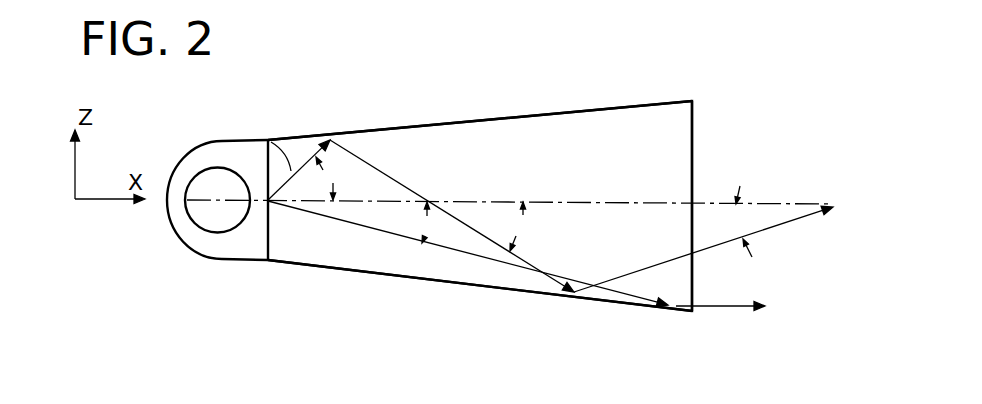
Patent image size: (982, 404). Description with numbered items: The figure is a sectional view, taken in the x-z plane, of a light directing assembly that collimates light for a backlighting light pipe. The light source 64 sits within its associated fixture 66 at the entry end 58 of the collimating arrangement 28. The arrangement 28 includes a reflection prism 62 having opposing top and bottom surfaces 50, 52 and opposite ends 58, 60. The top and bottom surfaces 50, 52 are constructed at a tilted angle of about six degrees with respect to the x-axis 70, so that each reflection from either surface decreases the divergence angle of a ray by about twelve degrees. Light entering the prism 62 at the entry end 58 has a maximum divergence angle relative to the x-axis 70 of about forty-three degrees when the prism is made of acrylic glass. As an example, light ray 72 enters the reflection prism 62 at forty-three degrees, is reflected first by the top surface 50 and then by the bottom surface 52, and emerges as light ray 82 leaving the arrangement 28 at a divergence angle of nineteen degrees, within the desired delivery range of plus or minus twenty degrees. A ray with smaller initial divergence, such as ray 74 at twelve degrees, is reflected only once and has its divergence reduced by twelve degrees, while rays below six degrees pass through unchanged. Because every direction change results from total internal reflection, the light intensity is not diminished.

The light directing arrangement 28 is at (384, 61).
The top surface 50 is at (393, 124).
The bottom surface 52 is at (413, 278).
The entry end 58 is at (270, 240).
The opposite end 60 is at (692, 133).
The reflection prism 62 is at (380, 147).
The light source 64 is at (208, 215).
The fixture 66 is at (208, 257).
The x-axis 70 is at (493, 200).
The light ray 72 is at (268, 140).
The light ray 74 is at (338, 222).
The light ray 82 is at (768, 232).